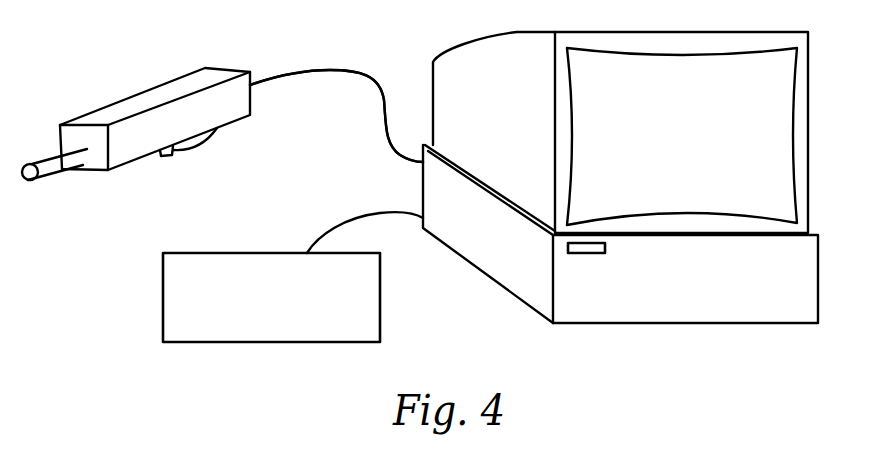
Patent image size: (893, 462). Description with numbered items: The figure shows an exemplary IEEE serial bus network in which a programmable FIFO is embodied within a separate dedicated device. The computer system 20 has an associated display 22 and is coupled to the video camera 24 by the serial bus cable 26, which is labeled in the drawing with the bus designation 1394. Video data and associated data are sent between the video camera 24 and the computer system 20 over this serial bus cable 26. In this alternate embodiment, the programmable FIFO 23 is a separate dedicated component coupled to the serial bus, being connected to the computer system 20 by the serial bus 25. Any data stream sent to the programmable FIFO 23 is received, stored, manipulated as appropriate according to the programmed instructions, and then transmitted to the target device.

The computer system 20 is at (818, 282).
The display 22 is at (810, 148).
The programmable FIFO 23 is at (380, 307).
The video camera 24 is at (228, 123).
The IEEE 1394-2000 serial bus 25 is at (358, 220).
The IEEE 1394-2000 serial bus cable 26 is at (383, 128).
The IEEE 1394 bus cable 1394 is at (336, 100).